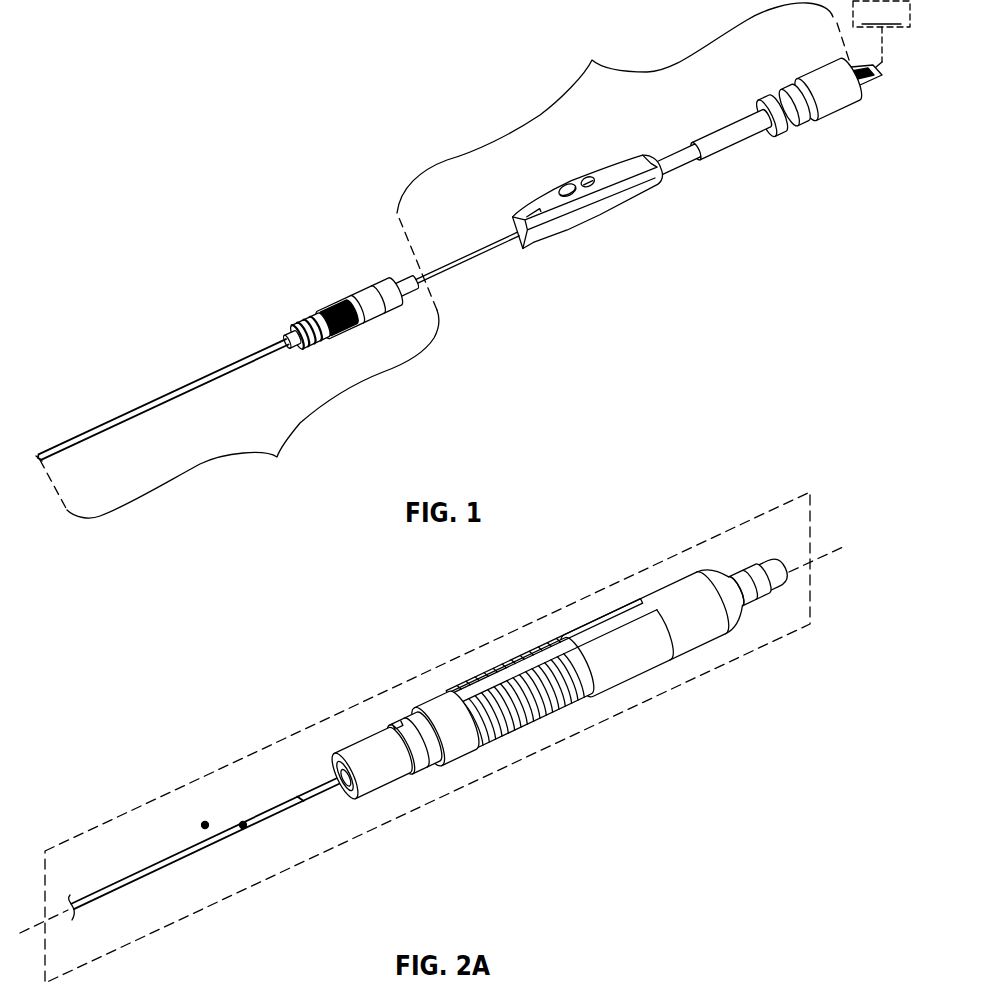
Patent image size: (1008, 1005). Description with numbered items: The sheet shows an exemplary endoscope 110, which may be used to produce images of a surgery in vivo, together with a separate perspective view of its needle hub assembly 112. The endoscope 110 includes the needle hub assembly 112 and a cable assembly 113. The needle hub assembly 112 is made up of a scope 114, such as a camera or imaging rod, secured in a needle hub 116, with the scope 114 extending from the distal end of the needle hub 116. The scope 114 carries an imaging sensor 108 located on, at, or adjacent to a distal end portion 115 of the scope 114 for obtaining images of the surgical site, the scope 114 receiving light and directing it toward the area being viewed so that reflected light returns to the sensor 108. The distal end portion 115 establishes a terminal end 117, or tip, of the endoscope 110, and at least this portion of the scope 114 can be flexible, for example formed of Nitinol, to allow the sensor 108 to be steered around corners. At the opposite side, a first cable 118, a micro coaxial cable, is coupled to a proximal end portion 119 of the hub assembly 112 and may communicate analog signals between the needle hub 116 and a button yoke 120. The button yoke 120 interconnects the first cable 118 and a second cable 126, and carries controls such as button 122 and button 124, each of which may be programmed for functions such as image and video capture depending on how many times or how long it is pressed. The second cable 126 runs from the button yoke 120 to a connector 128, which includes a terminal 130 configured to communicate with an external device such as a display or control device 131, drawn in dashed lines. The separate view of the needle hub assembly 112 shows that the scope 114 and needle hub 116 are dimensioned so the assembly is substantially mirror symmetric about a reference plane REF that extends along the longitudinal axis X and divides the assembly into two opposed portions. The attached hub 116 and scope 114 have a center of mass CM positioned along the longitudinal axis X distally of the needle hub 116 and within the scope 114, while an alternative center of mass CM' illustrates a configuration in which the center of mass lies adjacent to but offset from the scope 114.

In FIG. 1, the imaging sensor 108 is at (55, 441).
In FIG. 1, the endoscope 110 is at (236, 80).
In FIG. 1, the needle hub assembly 112 is at (277, 457).
In FIG. 2A, the needle hub assembly 112 is at (311, 655).
In FIG. 1, the cable assembly 113 is at (592, 60).
In FIG. 1, the scope 114 is at (187, 385).
In FIG. 2A, the scope 114 is at (157, 870).
In FIG. 1, the distal end portion 115 is at (50, 457).
In FIG. 1, the needle hub 116 is at (327, 303).
In FIG. 2A, the needle hub 116 is at (627, 687).
In FIG. 1, the terminal end 117 is at (37, 460).
In FIG. 1, the first cable 118 is at (457, 262).
In FIG. 1, the proximal end portion 119 is at (418, 277).
In FIG. 1, the button yoke 120 is at (592, 210).
In FIG. 1, the button 122 is at (567, 187).
In FIG. 1, the button 124 is at (588, 180).
In FIG. 1, the second cable 126 is at (720, 147).
In FIG. 1, the connector 128 is at (805, 82).
In FIG. 1, the terminal 130 is at (870, 87).
In FIG. 1, the control device 131 is at (881, 33).
In FIG. 2A, the center of mass CM is at (217, 772).
In FIG. 2A, the center of mass CM' is at (169, 783).
In FIG. 2A, the reference plane REF is at (740, 523).
In FIG. 2A, the longitudinal axis X is at (803, 560).